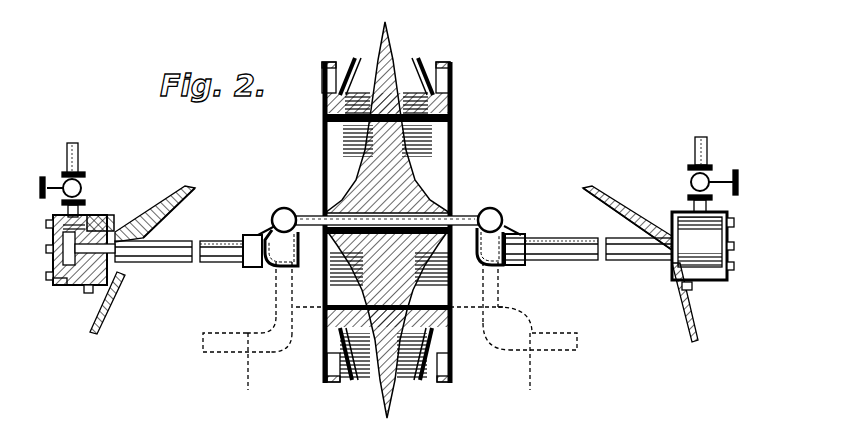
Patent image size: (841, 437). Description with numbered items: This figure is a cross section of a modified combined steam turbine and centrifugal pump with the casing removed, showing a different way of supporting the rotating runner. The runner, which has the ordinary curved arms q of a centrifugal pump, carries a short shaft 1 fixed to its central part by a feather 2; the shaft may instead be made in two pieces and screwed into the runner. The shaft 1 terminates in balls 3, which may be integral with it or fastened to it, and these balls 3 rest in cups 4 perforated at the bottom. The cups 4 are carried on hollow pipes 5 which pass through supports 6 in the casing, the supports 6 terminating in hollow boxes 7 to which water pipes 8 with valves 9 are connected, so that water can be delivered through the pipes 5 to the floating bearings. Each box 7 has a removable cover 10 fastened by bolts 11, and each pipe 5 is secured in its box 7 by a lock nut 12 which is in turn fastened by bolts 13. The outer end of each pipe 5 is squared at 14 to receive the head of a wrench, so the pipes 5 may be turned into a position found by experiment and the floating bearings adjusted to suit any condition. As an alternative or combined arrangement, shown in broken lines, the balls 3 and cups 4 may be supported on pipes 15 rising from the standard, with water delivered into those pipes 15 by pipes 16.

The short shaft 1 is at (414, 220).
The feather 2 is at (449, 212).
The balls 3 is at (287, 208).
The cups 4 is at (264, 228).
The hollow pipes 5 is at (187, 253).
The supports 6 is at (120, 267).
The hollow boxes 7 is at (67, 285).
The water pipes 8 is at (80, 152).
The valves 9 is at (64, 183).
The removable covers 10 is at (50, 229).
The bolts 11 is at (46, 258).
The lock nuts 12 is at (100, 222).
The bolts 13 is at (89, 293).
The squared outer end 14 is at (53, 285).
The pipes 15 is at (277, 298).
The pipes 16 is at (244, 352).
The curved arms q is at (392, 70).